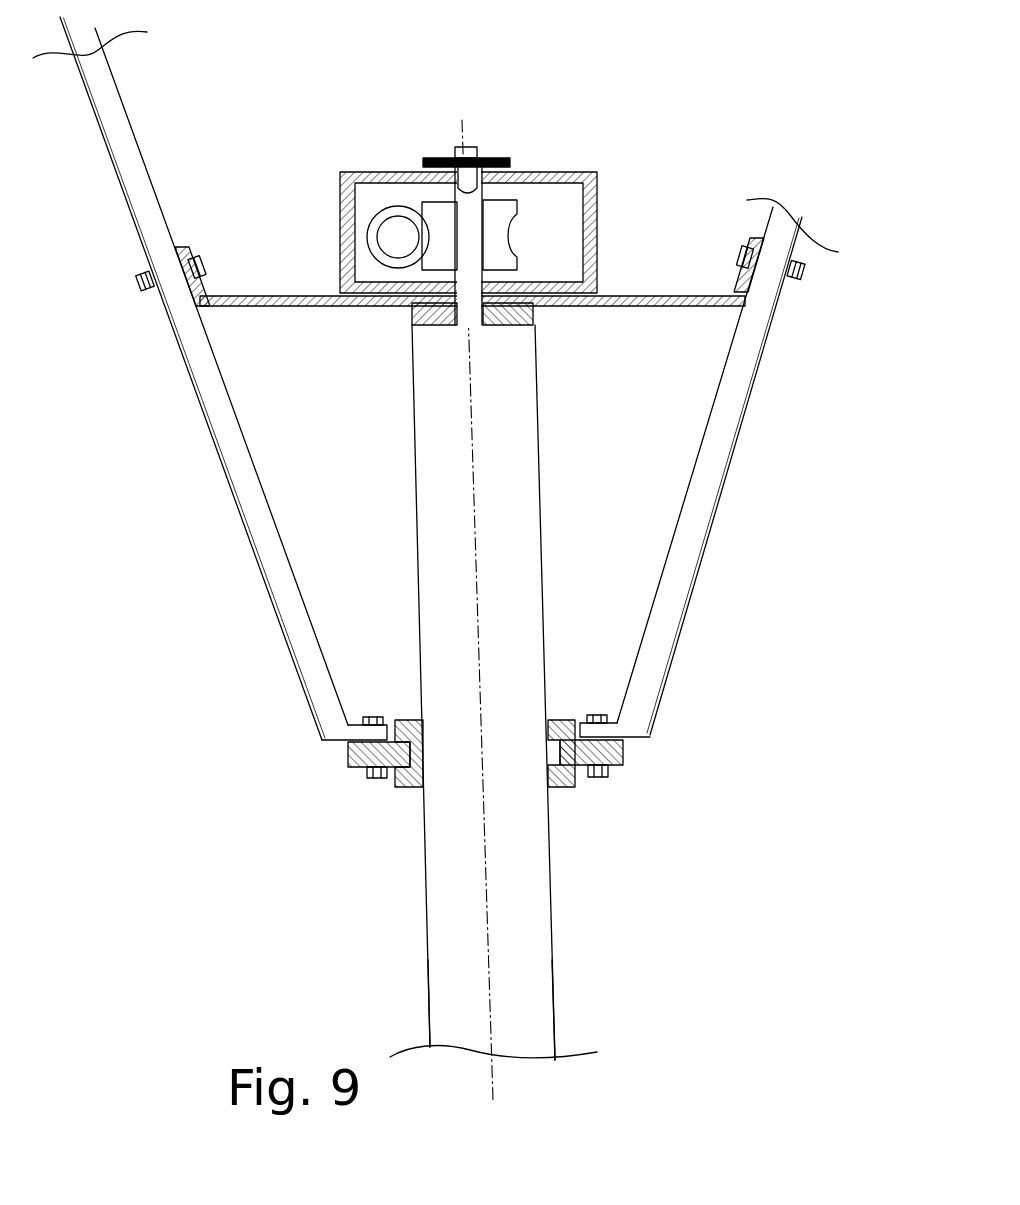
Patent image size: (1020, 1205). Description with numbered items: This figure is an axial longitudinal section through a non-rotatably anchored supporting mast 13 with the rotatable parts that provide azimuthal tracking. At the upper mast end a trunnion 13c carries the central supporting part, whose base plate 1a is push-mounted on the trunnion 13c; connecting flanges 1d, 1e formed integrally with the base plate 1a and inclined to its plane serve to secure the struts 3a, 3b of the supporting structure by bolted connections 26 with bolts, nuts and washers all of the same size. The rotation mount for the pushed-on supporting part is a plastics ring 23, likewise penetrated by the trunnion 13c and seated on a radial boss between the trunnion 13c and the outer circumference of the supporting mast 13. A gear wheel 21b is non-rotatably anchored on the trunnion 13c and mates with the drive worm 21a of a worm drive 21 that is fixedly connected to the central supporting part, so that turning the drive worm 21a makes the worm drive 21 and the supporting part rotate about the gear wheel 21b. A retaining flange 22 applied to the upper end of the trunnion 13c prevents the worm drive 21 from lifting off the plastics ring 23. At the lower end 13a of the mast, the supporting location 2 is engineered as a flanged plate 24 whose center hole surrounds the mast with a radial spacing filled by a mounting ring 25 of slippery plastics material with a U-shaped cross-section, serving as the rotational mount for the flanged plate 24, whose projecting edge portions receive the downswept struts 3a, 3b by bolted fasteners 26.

The base plate 1a is at (277, 307).
The connecting flange 1d is at (202, 286).
The connecting flange 1e is at (742, 280).
The supporting location 2 is at (540, 821).
The strut 3a is at (230, 463).
The strut 3b is at (722, 450).
The supporting mast 13 is at (515, 507).
The lower end of the mast 13a is at (468, 912).
The trunnion 13c is at (505, 158).
The worm drive 21 is at (569, 166).
The drive worm 21a is at (375, 215).
The gear wheel 21b is at (503, 223).
The retaining flange 22 is at (430, 158).
The plastics ring 23 is at (530, 316).
The flanged plate 24 is at (632, 760).
The mounting ring 25 is at (407, 788).
The bolted connection 26 is at (200, 258).